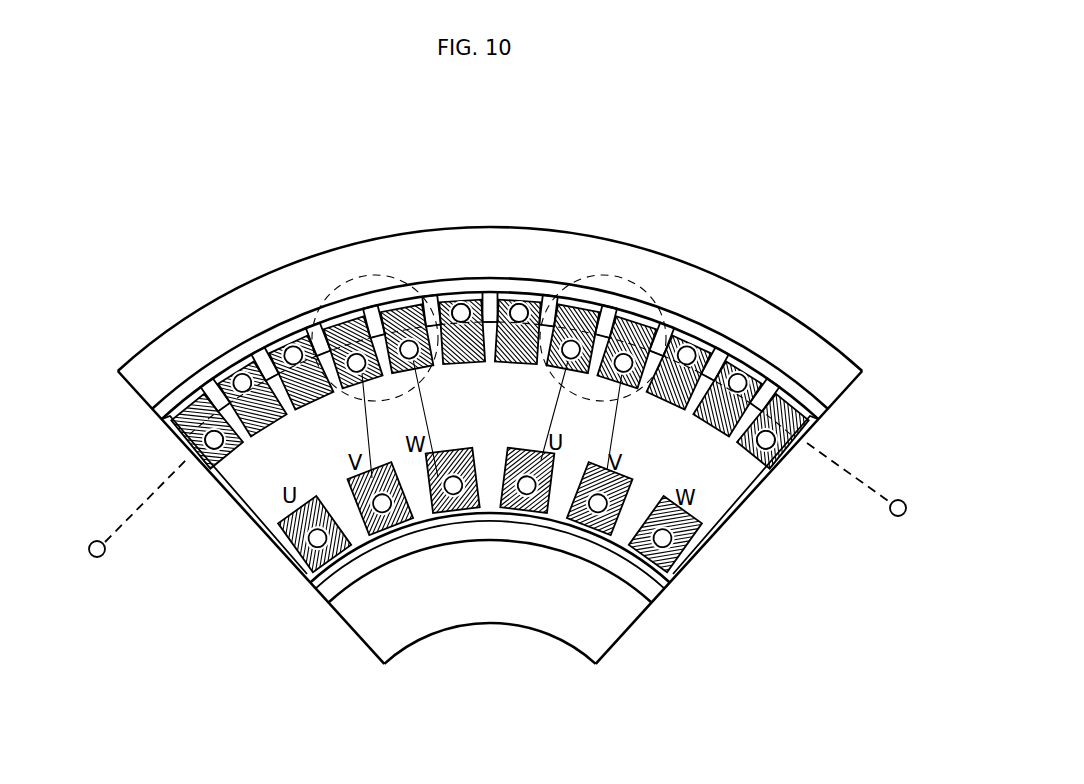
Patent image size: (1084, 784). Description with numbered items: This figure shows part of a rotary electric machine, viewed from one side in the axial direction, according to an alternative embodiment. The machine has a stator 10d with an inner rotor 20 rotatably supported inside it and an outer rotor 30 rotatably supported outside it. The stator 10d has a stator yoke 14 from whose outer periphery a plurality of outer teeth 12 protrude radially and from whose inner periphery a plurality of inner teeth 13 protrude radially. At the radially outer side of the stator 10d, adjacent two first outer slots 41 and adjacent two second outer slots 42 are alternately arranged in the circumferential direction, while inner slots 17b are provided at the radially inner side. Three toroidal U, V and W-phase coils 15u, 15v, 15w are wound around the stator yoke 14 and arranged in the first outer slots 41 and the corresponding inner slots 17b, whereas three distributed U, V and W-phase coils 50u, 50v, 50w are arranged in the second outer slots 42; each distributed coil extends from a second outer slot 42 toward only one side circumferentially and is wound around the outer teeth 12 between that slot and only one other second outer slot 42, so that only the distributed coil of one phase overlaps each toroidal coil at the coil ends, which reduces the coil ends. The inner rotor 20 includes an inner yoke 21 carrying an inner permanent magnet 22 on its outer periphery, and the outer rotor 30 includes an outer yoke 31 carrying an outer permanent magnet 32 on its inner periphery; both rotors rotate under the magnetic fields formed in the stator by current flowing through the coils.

The stator 10d is at (753, 514).
The outer teeth 12 is at (607, 317).
The inner teeth 13 is at (425, 509).
The stator yoke 14 is at (717, 513).
The U-phase coil 15u is at (189, 432).
The V-phase coil 15v is at (285, 358).
The W-phase coil 15w is at (397, 312).
The inner slots 17b is at (392, 525).
The inner rotor 20 is at (504, 577).
The inner yoke 21 is at (622, 608).
The inner permanent magnet 22 is at (655, 589).
The outer rotor 30 is at (524, 362).
The outer yoke 31 is at (773, 301).
The outer permanent magnet 32 is at (833, 412).
The first outer slot 41 is at (345, 318).
The second outer slot 42 is at (467, 297).
The U-phase coil 50u is at (188, 405).
The V-phase coil 50v is at (227, 377).
The W-phase coil 50w is at (790, 413).